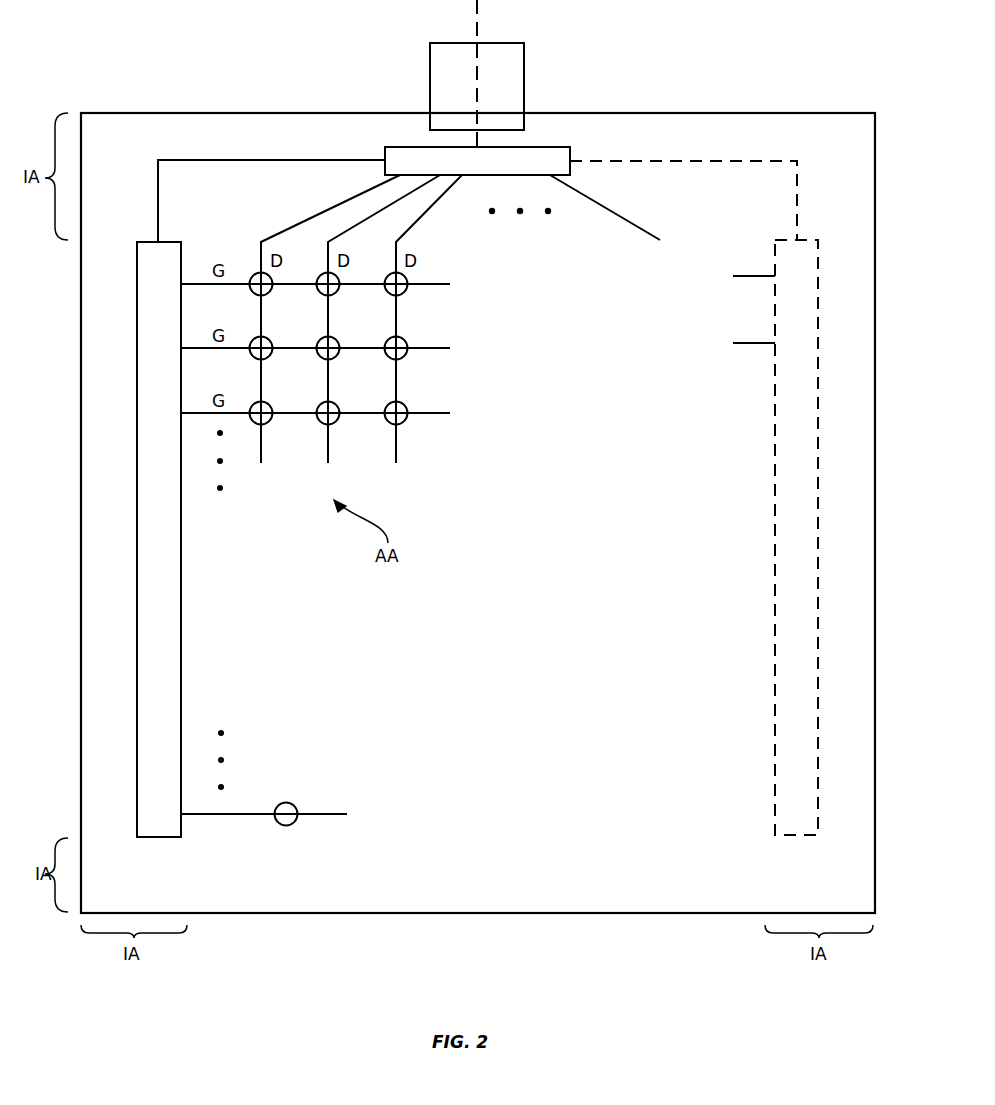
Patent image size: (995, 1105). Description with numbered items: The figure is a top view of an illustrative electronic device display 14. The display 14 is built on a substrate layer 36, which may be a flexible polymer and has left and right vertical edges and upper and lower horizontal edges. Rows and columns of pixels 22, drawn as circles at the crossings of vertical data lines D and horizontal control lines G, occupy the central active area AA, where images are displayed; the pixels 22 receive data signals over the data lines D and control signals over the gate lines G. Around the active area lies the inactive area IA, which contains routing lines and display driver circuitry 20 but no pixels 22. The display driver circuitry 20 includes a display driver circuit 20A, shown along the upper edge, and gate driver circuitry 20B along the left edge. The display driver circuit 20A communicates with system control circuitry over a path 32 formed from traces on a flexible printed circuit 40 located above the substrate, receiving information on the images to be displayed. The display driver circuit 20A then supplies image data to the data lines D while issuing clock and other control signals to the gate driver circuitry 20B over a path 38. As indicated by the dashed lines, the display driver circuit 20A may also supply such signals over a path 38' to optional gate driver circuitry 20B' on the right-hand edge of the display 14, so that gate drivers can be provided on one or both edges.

The display 14 is at (478, 462).
The display driver circuitry 20 is at (495, 484).
The display driver circuit 20A is at (536, 147).
The gate driver circuitry 20B is at (194, 529).
The gate driver circuitry 20B' is at (814, 512).
The pixels 22 is at (405, 290).
The path 32 is at (480, 88).
The substrate layer 36 is at (825, 113).
The path 38 is at (271, 201).
The path 38' is at (683, 200).
The flexible printed circuit 40 is at (430, 68).